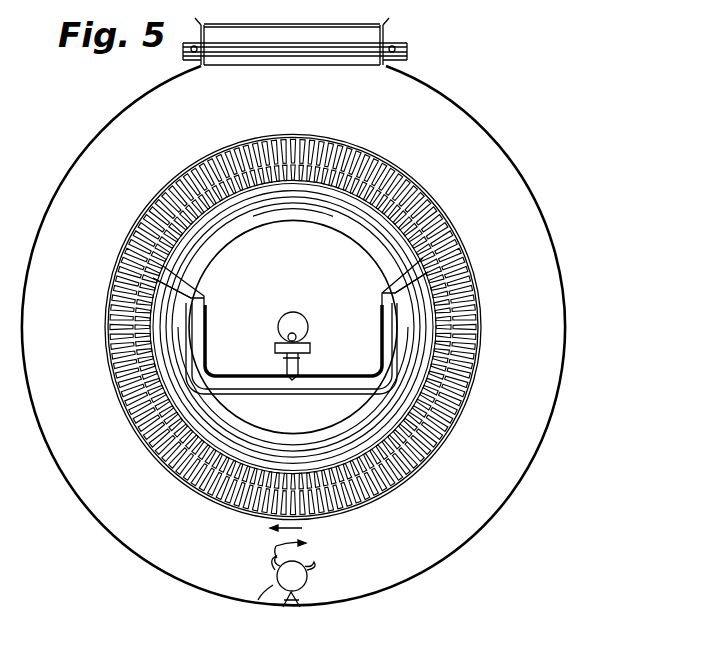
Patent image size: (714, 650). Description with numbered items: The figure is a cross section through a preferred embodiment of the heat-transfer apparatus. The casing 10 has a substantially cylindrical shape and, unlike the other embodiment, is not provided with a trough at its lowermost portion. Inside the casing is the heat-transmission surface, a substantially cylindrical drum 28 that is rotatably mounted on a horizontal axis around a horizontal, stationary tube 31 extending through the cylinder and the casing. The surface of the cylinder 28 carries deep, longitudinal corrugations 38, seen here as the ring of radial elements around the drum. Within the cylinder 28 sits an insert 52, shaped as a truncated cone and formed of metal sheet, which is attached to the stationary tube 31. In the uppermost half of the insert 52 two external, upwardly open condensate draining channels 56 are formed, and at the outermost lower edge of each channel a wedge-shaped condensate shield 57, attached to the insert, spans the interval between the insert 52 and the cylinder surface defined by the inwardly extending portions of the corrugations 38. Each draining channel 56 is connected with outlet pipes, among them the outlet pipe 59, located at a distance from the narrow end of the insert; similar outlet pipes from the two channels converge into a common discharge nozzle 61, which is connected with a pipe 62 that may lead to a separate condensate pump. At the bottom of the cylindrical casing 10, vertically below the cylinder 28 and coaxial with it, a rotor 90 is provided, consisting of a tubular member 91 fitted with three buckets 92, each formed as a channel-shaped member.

The casing 10 is at (566, 314).
The cylindrical drum 28 is at (407, 473).
The stationary tube 31 is at (300, 322).
The longitudinal corrugations 38 is at (469, 351).
The insert 52 is at (405, 414).
The condensate draining channels 56 is at (187, 303).
The condensate shield 57 is at (162, 273).
The outlet pipe 59 is at (197, 343).
The discharge nozzle 61 is at (298, 363).
The pipe 62 is at (287, 337).
The rotor 90 is at (307, 586).
The tubular member 91 is at (273, 585).
The buckets 92 is at (290, 598).